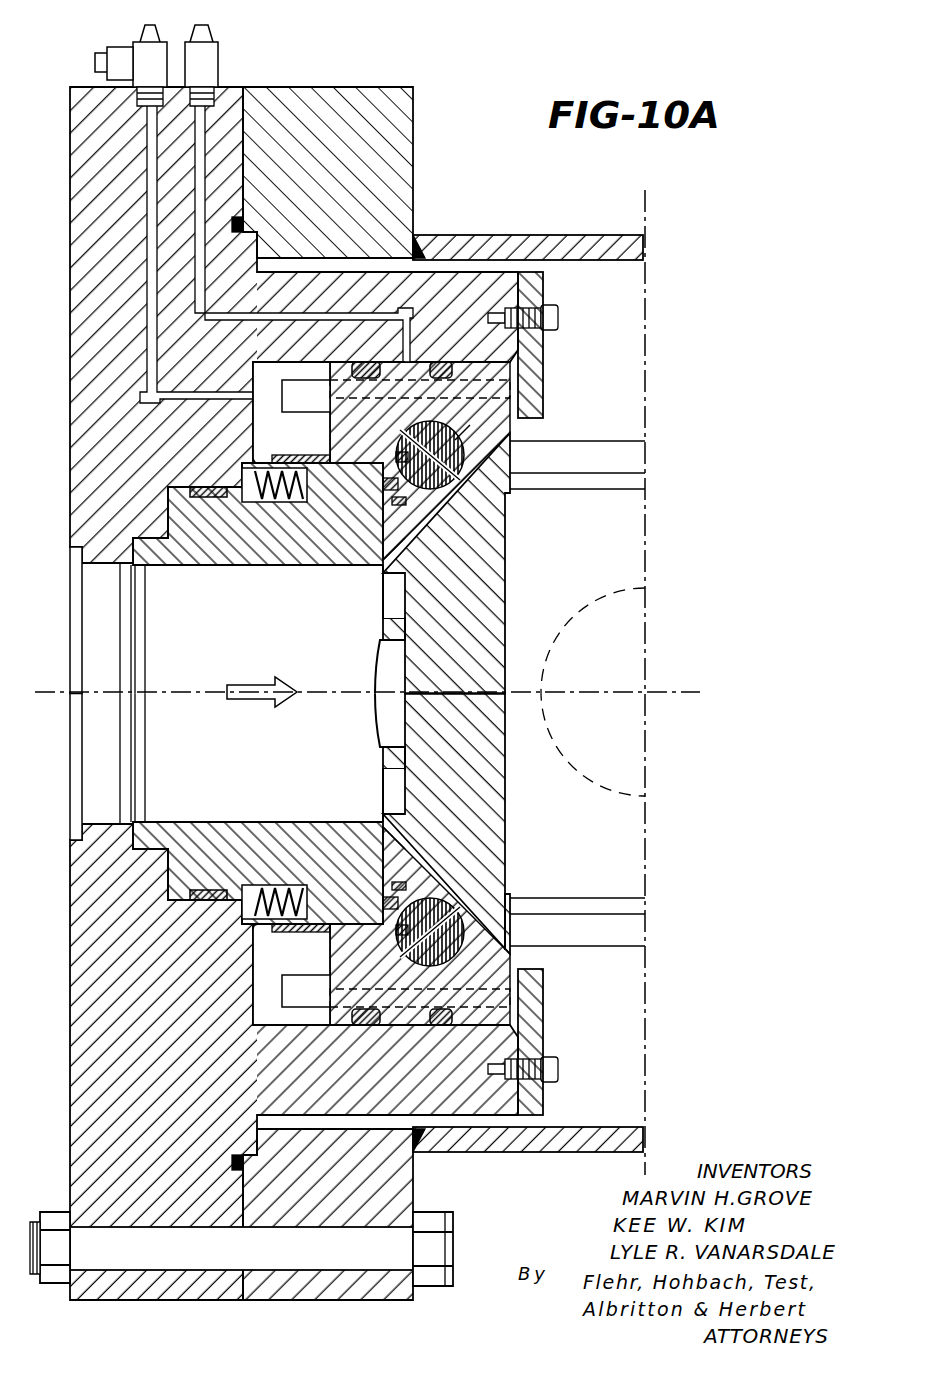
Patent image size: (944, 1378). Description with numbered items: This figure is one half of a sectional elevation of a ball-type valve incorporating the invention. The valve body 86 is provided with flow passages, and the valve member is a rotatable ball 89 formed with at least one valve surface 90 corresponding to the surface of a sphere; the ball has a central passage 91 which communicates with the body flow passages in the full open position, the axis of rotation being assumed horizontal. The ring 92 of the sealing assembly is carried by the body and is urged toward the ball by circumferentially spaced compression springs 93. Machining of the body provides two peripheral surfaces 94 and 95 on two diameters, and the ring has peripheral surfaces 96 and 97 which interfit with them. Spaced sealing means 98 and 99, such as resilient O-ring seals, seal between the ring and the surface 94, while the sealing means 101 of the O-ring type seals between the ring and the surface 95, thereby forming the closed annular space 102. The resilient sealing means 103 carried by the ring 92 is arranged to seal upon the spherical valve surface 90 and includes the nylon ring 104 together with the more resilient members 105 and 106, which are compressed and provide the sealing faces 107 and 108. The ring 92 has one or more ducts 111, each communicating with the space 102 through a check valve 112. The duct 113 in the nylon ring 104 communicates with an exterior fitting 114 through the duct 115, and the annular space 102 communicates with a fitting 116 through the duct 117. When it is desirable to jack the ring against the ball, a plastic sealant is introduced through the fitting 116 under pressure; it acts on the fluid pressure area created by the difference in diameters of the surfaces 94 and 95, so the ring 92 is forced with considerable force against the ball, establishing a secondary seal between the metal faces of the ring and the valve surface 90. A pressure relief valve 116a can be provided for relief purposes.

The valve body 86 is at (495, 235).
The rotatable ball 89 is at (378, 745).
The valve surface 90 is at (505, 905).
The central passage 91 is at (584, 839).
The ring 92 is at (240, 570).
The compression springs 93 is at (274, 502).
The peripheral surface 94 is at (489, 350).
The peripheral surface 95 is at (202, 470).
The peripheral surface 96 is at (358, 363).
The peripheral surface 97 is at (182, 500).
The sealing means 98 is at (392, 362).
The sealing means 99 is at (455, 352).
The sealing means 101 is at (238, 478).
The closed annular space 102 is at (257, 368).
The resilient sealing means 103 is at (395, 505).
The nylon ring 104 is at (388, 486).
The resilient member 105 is at (404, 524).
The resilient member 106 is at (458, 446).
The sealing face 107 is at (455, 510).
The sealing face 108 is at (469, 478).
The duct 111 is at (490, 382).
The check valve 112 is at (317, 416).
The duct 113 is at (400, 462).
The exterior fitting 114 is at (219, 70).
The duct 115 is at (205, 142).
The fitting 116 is at (132, 48).
The pressure relief valve 116a is at (96, 61).
The duct 117 is at (150, 233).